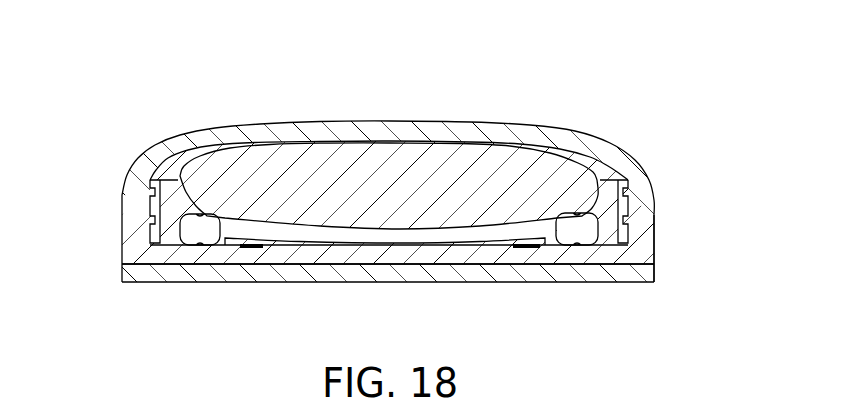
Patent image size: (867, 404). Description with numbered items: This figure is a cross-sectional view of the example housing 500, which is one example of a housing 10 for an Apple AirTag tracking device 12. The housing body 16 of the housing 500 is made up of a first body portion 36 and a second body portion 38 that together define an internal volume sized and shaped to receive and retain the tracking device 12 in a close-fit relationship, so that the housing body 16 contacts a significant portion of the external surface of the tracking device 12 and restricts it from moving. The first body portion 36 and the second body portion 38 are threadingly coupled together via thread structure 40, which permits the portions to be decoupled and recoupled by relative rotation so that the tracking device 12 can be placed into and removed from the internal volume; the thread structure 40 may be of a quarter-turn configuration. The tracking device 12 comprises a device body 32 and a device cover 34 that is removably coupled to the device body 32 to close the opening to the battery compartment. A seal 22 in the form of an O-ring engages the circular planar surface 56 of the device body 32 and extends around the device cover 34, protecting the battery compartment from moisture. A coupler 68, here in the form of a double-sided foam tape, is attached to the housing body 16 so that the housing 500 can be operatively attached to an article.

The housing 10 is at (614, 48).
The housing 500 is at (606, 88).
The tracking device 12 is at (319, 138).
The housing body 16 is at (495, 118).
The seal 22 is at (210, 217).
The device body 32 is at (421, 137).
The device cover 34 is at (287, 245).
The first body portion 36 is at (258, 124).
The second body portion 38 is at (655, 256).
The thread structure 40 is at (625, 210).
The circular planar surface 56 is at (572, 222).
The coupler 68 is at (447, 282).